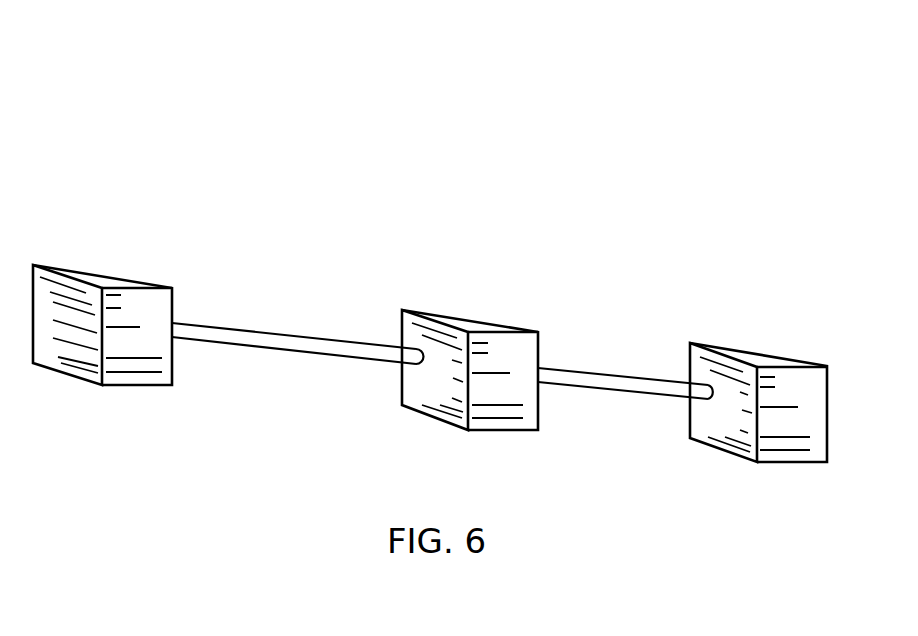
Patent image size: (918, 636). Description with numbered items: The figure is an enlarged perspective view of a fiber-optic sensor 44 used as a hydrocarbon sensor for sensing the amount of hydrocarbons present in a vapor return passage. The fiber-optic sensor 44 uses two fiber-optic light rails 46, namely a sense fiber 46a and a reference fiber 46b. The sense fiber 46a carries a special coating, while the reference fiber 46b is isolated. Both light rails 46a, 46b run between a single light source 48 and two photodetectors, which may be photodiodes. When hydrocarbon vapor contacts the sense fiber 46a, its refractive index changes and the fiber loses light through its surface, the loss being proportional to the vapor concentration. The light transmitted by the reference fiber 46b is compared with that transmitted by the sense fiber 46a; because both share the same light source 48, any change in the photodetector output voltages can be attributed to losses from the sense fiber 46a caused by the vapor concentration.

The fiber-optic sensor 44 is at (235, 88).
The fiber-optic light rails 46 is at (227, 325).
The sense fiber 46a is at (332, 347).
The reference fiber 46b is at (590, 387).
The light source 48 is at (457, 318).